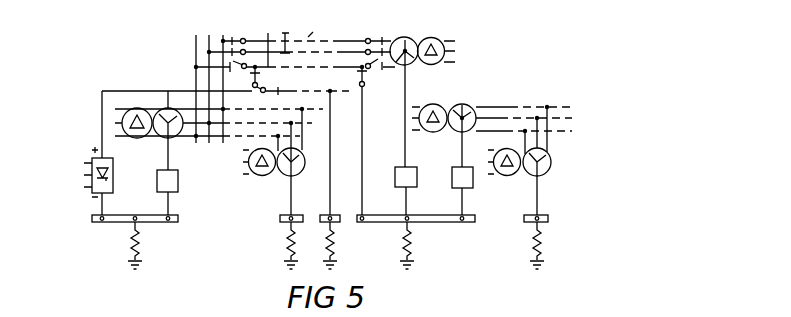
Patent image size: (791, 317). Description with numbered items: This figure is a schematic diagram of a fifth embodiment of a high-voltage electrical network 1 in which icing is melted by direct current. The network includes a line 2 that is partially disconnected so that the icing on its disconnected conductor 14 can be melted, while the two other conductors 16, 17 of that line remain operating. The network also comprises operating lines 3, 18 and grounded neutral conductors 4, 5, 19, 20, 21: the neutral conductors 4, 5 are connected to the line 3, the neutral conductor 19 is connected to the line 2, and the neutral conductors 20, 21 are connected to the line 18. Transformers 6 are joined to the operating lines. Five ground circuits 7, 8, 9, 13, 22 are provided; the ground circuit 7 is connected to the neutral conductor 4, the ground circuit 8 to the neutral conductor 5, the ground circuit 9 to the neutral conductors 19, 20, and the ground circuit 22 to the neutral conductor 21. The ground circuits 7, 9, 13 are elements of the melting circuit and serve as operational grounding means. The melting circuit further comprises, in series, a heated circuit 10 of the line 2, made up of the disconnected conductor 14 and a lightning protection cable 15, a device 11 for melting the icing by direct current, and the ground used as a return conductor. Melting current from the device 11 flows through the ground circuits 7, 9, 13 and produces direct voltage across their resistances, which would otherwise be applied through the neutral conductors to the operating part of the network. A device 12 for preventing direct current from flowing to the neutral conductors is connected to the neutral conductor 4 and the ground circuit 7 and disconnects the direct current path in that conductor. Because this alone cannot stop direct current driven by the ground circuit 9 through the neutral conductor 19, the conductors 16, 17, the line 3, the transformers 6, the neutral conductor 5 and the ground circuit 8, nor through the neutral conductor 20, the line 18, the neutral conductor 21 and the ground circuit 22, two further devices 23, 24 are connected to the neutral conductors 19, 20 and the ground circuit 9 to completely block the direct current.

The high-voltage electrical network 1 is at (176, 34).
The line 2 is at (341, 35).
The operating line 3 is at (233, 143).
The neutral conductor 4 is at (167, 160).
The neutral conductor 5 is at (290, 203).
The transformers 6 is at (172, 139).
The ground circuit 7 is at (92, 219).
The ground circuit 8 is at (280, 221).
The ground circuit 9 is at (384, 213).
The heated circuit 10 is at (243, 80).
The device for melting the icing by direct current 11 is at (92, 158).
The device for preventing the direct current from flowing to the neutral conductors 12 is at (156, 183).
The ground circuit 13 is at (333, 214).
The disconnected conductor 14 is at (261, 38).
The lightning protection cable 15 is at (318, 91).
The conductor 16 is at (287, 31).
The conductor 17 is at (313, 23).
The operating line 18 is at (526, 100).
The neutral conductor 19 is at (404, 95).
The neutral conductor 20 is at (461, 156).
The neutral conductor 21 is at (537, 196).
The ground circuit 22 is at (525, 219).
The device for preventing the direct current from flowing to the neutral conductors 23 is at (403, 164).
The device for preventing the direct current from flowing to the neutral conductors 24 is at (451, 180).